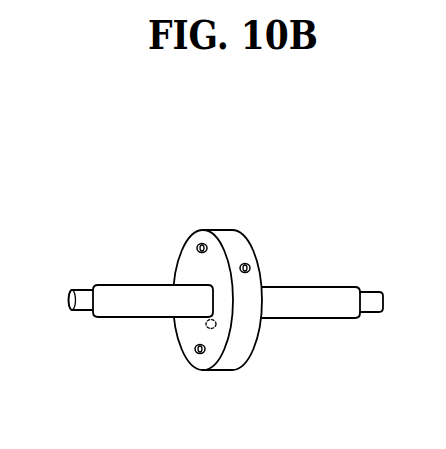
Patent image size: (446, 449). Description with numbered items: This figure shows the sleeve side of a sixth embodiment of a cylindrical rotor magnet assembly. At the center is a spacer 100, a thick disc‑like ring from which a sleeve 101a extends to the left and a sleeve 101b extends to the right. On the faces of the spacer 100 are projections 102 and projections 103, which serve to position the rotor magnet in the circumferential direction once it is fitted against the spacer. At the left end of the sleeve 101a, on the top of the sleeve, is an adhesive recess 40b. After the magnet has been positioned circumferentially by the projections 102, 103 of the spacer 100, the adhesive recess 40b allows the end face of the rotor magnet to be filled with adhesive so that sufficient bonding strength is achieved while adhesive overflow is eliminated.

The spacer 100 is at (235, 245).
The sleeve 101a is at (128, 297).
The sleeve 101b is at (337, 297).
The projection 102 is at (197, 247).
The projection 103 is at (258, 263).
The adhesive recess 40b is at (83, 308).